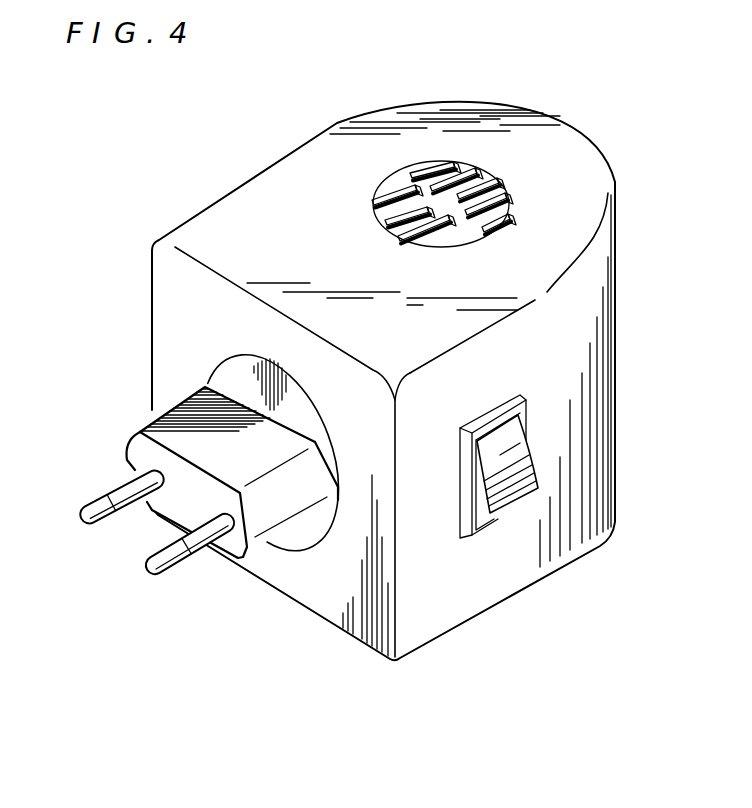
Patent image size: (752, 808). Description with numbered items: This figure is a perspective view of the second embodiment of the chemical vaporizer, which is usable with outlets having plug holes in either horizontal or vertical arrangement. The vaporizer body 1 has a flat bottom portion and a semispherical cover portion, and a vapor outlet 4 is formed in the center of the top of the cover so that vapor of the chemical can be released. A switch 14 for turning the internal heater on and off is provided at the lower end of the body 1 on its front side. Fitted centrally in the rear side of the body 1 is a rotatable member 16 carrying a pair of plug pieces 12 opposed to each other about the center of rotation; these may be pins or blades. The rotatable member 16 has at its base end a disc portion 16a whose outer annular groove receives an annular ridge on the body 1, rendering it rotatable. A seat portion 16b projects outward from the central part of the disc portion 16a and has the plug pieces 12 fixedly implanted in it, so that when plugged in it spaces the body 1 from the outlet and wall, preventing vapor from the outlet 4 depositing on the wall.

The vaporizer body 1 is at (263, 213).
The vapor outlet 4 is at (445, 206).
The plug pieces 12 is at (93, 507).
The switch 14 is at (522, 442).
The rotatable member 16 is at (233, 529).
The disc portion 16a is at (313, 533).
The seat portion 16b is at (267, 542).